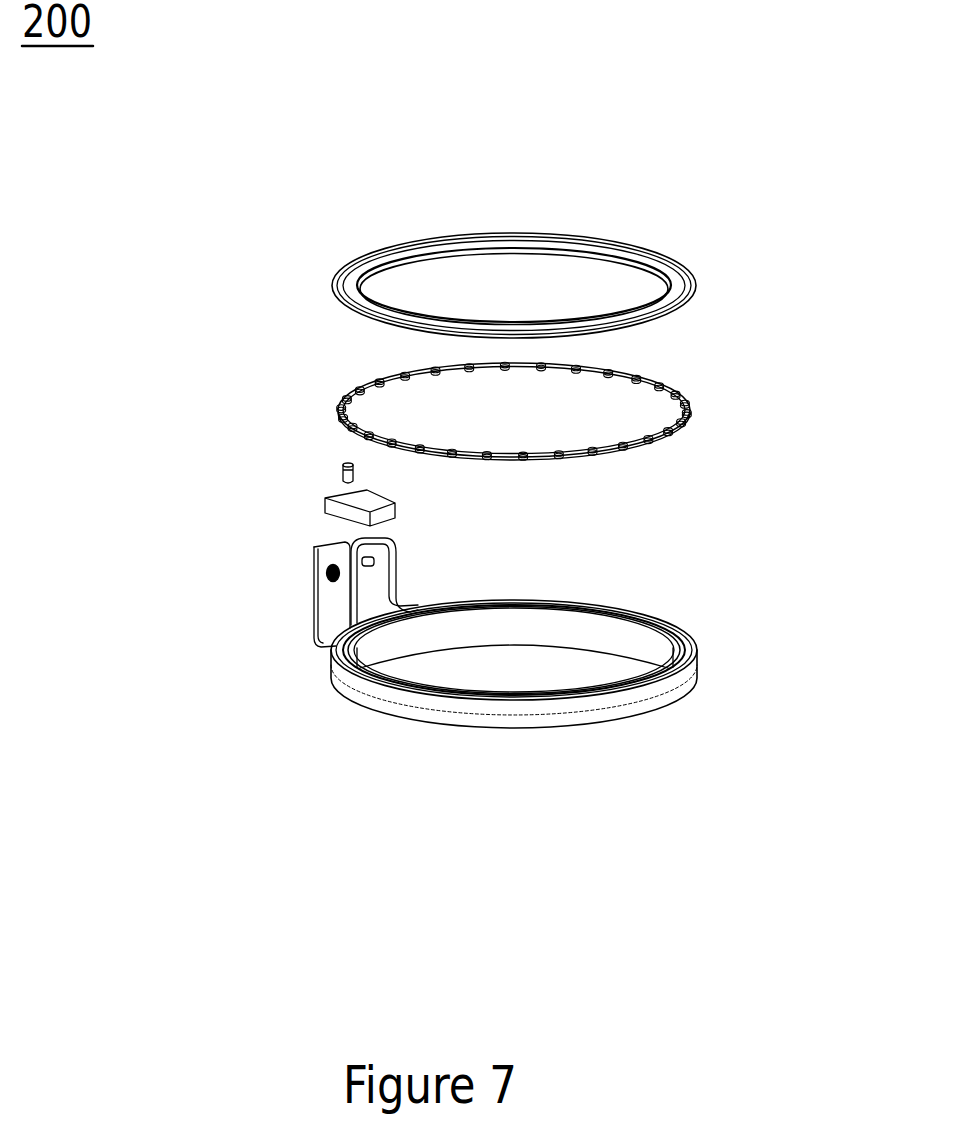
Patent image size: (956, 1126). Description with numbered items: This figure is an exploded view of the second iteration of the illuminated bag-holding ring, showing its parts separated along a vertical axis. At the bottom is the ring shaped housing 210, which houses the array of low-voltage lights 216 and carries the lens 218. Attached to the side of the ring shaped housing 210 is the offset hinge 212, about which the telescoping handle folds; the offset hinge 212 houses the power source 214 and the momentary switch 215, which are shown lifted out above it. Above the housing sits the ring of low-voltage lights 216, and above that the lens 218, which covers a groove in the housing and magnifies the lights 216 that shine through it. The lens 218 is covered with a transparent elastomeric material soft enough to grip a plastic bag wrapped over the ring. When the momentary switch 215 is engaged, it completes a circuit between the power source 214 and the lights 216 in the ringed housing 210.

The ring shaped housing 210 is at (415, 703).
The offset hinge 212 is at (323, 558).
The power source 214 is at (333, 508).
The momentary switch 215 is at (345, 462).
The array of low-voltage lights 216 is at (690, 407).
The lens 218 is at (695, 290).